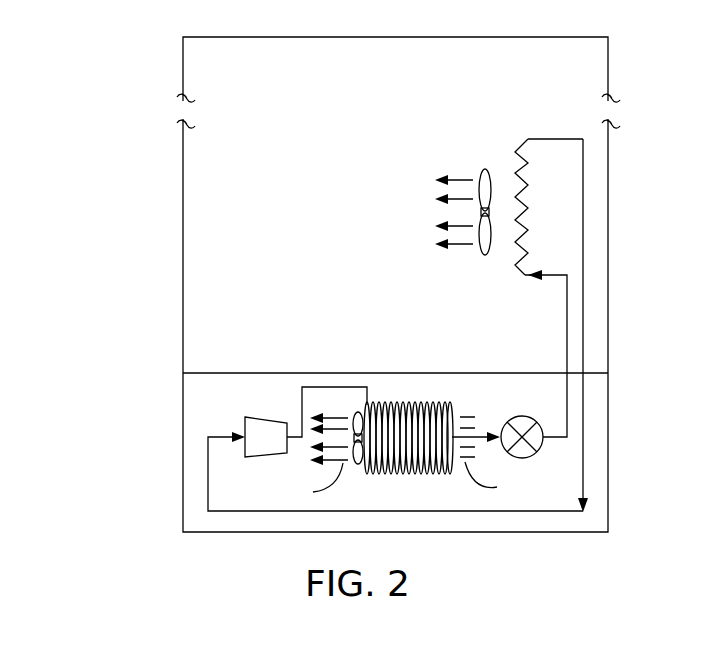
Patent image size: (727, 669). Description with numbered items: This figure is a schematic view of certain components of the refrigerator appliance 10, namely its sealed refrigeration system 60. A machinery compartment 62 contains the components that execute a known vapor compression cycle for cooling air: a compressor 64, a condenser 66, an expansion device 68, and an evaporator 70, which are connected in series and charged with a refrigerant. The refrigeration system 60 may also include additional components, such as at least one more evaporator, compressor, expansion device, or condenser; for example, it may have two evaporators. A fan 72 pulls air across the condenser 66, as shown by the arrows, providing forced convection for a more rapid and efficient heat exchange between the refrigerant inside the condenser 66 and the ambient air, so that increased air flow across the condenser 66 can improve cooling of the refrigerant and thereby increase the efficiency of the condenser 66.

The refrigerator appliance 10 is at (127, 160).
The sealed refrigeration system 60 is at (387, 357).
The machinery compartment 62 is at (218, 402).
The compressor 64 is at (267, 417).
The condenser 66 is at (427, 403).
The expansion device 68 is at (513, 417).
The evaporator 70 is at (515, 173).
The fan 72 is at (355, 418).